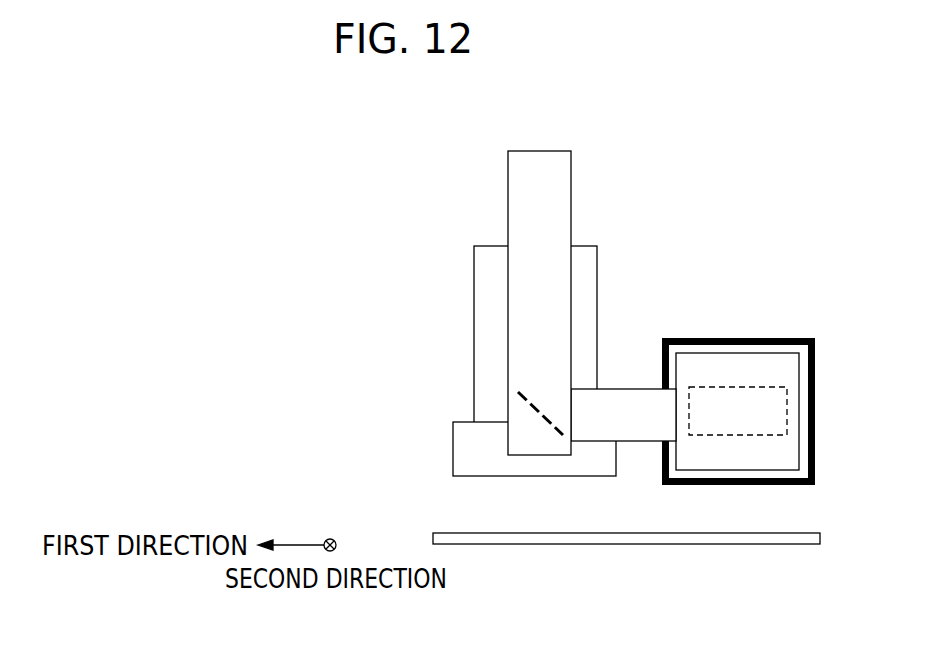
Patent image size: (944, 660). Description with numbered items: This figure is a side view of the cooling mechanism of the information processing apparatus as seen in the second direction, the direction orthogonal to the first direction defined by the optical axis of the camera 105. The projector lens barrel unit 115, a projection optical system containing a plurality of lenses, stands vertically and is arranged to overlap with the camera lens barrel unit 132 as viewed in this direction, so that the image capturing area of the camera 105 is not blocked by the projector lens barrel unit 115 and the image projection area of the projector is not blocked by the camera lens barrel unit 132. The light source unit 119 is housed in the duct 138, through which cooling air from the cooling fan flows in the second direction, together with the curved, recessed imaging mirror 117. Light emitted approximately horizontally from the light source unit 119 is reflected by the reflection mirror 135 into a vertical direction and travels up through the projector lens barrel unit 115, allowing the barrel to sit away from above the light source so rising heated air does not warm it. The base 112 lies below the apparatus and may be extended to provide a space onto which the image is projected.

The camera 105 is at (457, 448).
The base 112 is at (683, 542).
The projector lens barrel unit 115 is at (517, 197).
The imaging mirror 117 is at (775, 453).
The light source unit 119 is at (775, 405).
The camera lens barrel unit 132 is at (483, 322).
The reflection mirror 135 is at (543, 422).
The duct 138 is at (757, 338).